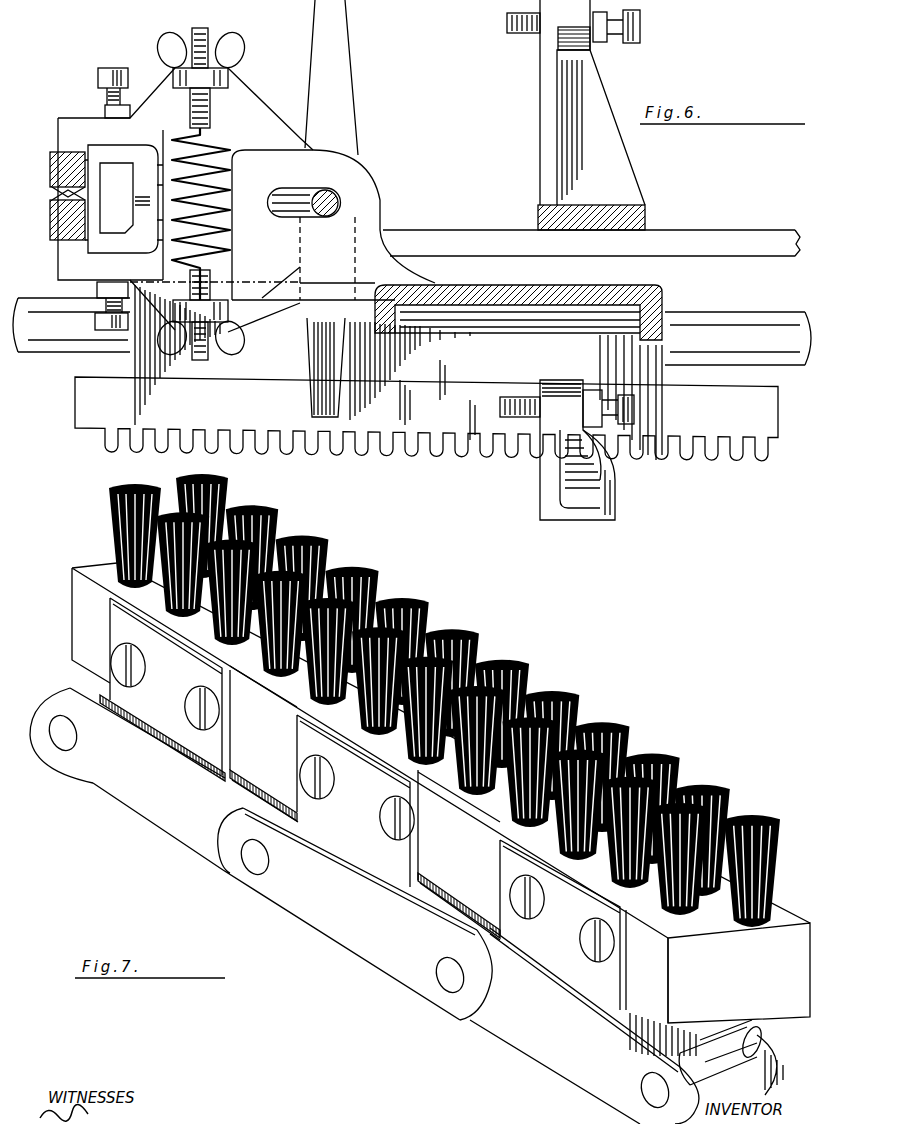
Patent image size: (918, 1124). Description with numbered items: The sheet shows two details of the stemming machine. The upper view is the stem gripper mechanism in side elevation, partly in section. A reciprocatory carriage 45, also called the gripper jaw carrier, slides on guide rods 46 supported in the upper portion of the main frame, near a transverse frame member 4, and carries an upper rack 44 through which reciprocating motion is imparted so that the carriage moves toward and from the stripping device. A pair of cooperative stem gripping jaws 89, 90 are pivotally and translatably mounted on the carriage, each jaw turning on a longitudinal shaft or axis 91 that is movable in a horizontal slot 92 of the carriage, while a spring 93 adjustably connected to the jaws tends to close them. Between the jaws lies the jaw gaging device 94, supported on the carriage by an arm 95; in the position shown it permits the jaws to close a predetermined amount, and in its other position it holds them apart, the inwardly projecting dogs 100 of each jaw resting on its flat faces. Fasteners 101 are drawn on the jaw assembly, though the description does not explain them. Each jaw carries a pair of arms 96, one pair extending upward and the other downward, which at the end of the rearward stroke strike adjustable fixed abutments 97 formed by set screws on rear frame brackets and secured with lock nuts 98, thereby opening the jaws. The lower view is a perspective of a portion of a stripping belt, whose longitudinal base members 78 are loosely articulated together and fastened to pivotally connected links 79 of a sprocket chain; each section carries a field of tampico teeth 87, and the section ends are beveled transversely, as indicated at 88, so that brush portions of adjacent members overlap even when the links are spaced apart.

In FIG. 6, the transverse frame member 4 is at (480, 231).
In FIG. 6, the upper rack 44 is at (426, 419).
In FIG. 6, the reciprocatory carriage 45 is at (552, 292).
In FIG. 6, the guide rod 46 is at (738, 314).
In FIG. 6, the stem gripping jaw 89 is at (63, 118).
In FIG. 6, the stem gripping jaw 90 is at (60, 275).
In FIG. 6, the longitudinal shaft or axis 91 is at (325, 216).
In FIG. 6, the horizontal slot 92 is at (300, 210).
In FIG. 6, the spring 93 is at (222, 160).
In FIG. 6, the jaw gaging device 94 is at (125, 198).
In FIG. 6, the arm 95 is at (163, 177).
In FIG. 6, the jaw arm 96 is at (336, 9).
In FIG. 6, the adjustable fixed abutment 97 is at (513, 34).
In FIG. 6, the lock nut 98 is at (592, 392).
In FIG. 6, the dog 100 is at (146, 172).
In FIG. 6, the bolt 101 is at (102, 64).
In FIG. 7, the base member 78 is at (384, 810).
In FIG. 7, the link 79 is at (406, 906).
In FIG. 7, the field of teeth 87 is at (508, 663).
In FIG. 7, the beveled end 88 is at (492, 830).